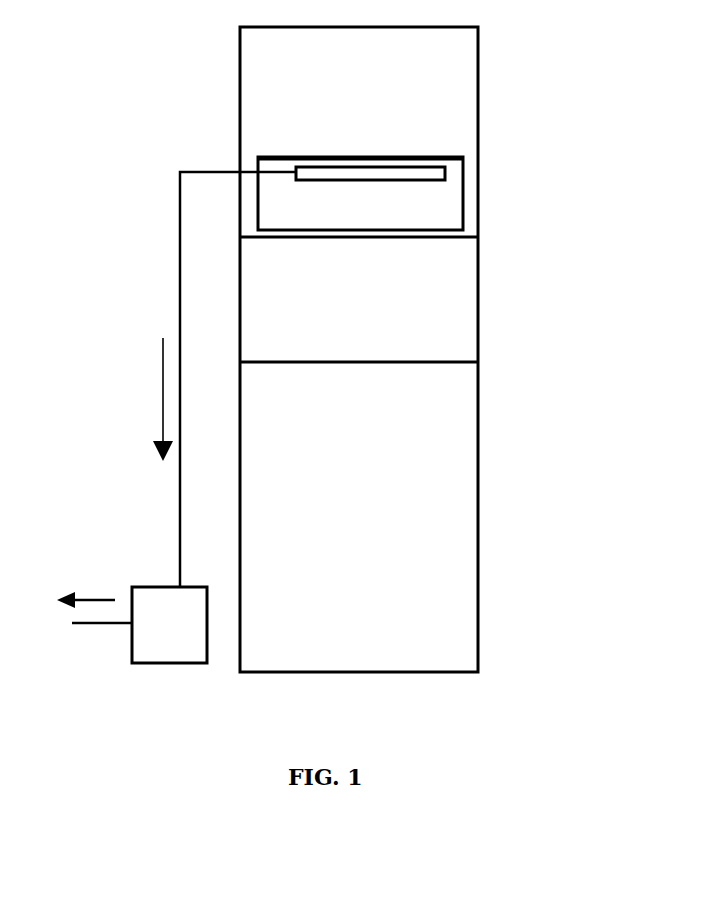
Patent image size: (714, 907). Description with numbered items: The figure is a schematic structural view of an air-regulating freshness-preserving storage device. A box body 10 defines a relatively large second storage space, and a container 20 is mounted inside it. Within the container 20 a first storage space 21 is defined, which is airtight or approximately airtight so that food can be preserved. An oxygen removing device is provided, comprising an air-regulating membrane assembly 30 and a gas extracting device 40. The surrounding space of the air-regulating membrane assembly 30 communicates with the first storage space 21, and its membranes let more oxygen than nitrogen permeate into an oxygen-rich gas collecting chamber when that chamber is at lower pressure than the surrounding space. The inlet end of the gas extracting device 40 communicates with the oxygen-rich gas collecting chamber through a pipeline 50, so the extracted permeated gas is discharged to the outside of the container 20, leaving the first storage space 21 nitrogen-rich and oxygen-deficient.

The box body 10 is at (242, 55).
The container 20 is at (463, 210).
The first storage space 21 is at (443, 195).
The air-regulating membrane assembly 30 is at (325, 165).
The gas extracting device 40 is at (147, 605).
The pipeline 50 is at (180, 288).